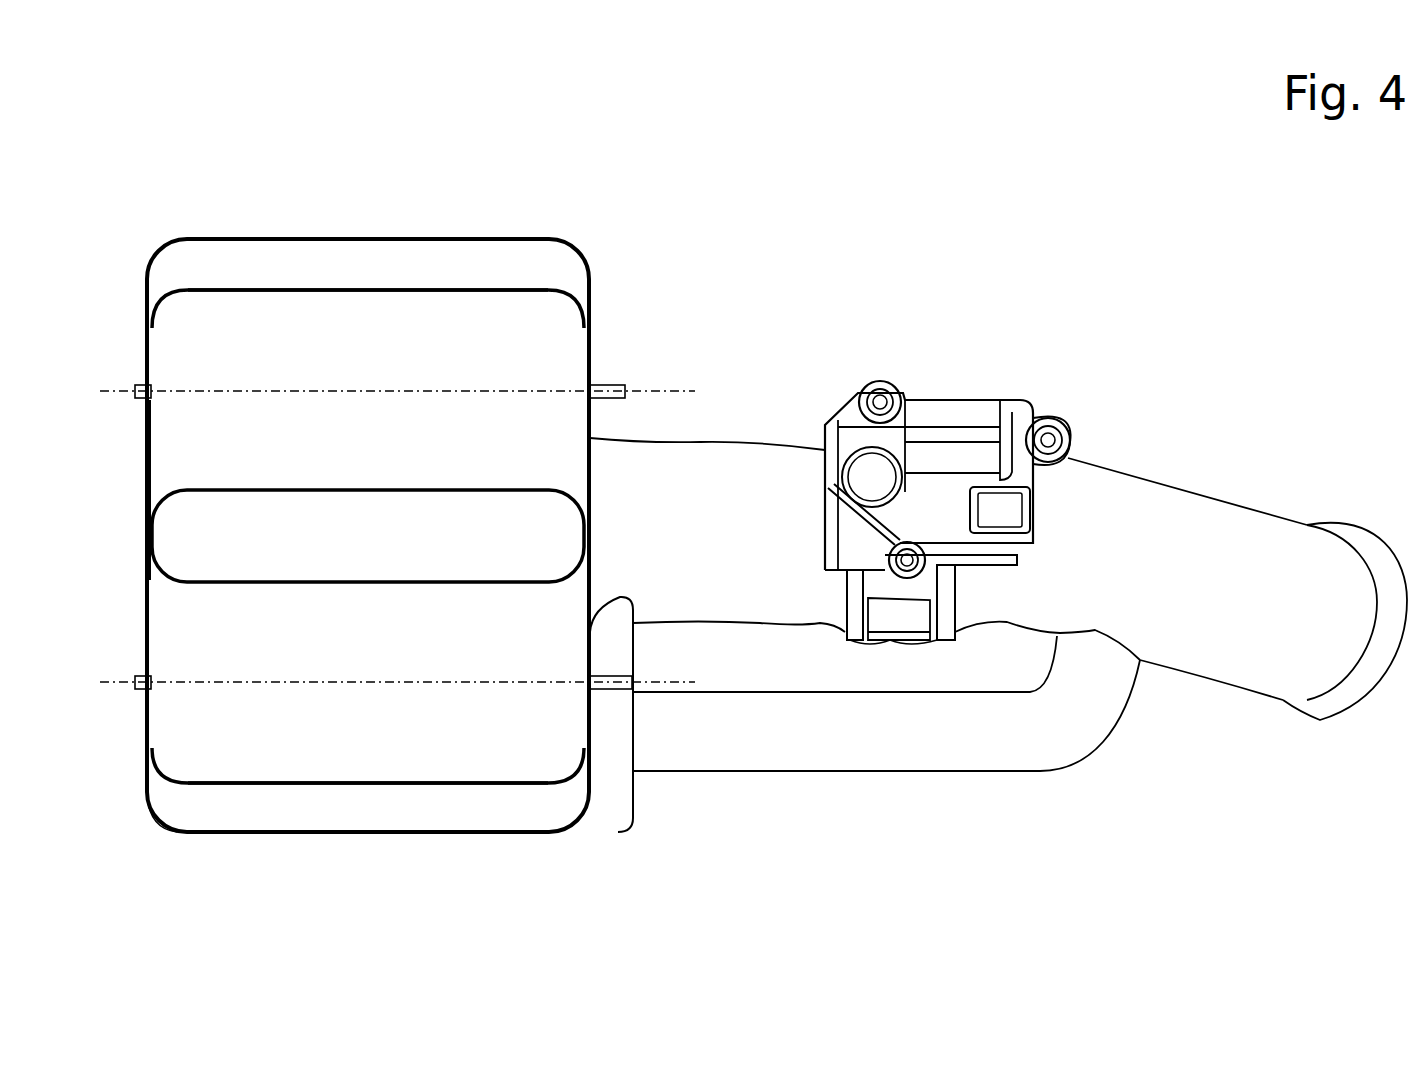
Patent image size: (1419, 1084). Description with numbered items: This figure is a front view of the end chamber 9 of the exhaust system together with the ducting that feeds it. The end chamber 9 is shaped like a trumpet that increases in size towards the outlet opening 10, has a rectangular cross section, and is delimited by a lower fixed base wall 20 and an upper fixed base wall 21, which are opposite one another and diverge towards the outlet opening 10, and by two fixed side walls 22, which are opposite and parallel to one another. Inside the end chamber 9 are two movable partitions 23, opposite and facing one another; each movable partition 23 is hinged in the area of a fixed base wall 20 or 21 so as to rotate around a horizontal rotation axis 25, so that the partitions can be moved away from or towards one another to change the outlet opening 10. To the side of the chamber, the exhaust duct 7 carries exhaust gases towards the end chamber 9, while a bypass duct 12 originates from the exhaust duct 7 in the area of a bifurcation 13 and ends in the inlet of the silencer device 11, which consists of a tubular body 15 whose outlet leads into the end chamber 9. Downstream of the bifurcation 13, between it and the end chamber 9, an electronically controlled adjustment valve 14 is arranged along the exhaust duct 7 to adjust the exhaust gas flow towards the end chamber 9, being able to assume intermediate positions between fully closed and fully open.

The exhaust duct 7 is at (1295, 582).
The end chamber 9 is at (652, 176).
The outlet opening 10 is at (363, 748).
The silencer device 11 is at (678, 813).
The bypass duct 12 is at (910, 734).
The bifurcation 13 is at (1152, 688).
The adjustment valve 14 is at (925, 493).
The tubular body 15 is at (607, 776).
The fixed base wall 20 is at (490, 806).
The fixed base wall 21 is at (363, 268).
The fixed side wall 22 is at (590, 420).
The movable partition 23 is at (245, 287).
The rotation axis 25 is at (663, 388).